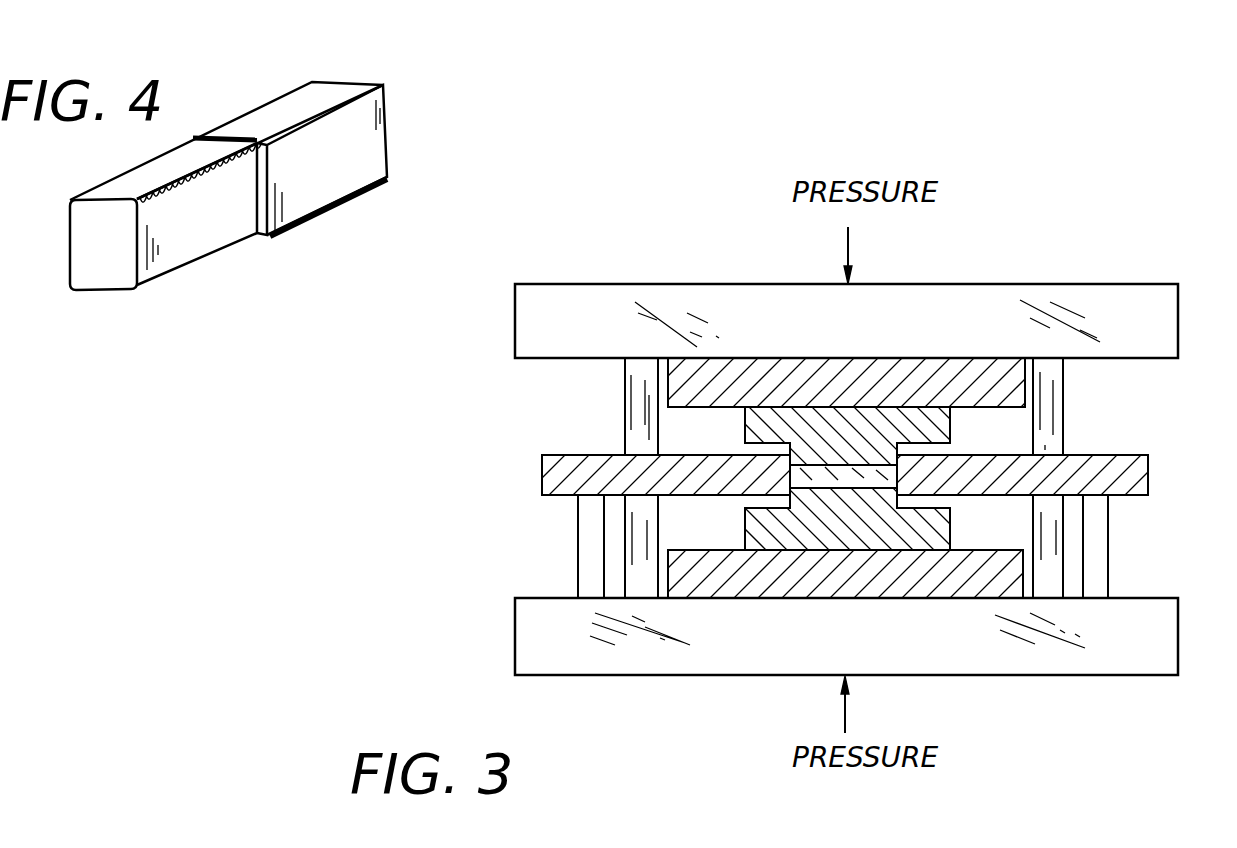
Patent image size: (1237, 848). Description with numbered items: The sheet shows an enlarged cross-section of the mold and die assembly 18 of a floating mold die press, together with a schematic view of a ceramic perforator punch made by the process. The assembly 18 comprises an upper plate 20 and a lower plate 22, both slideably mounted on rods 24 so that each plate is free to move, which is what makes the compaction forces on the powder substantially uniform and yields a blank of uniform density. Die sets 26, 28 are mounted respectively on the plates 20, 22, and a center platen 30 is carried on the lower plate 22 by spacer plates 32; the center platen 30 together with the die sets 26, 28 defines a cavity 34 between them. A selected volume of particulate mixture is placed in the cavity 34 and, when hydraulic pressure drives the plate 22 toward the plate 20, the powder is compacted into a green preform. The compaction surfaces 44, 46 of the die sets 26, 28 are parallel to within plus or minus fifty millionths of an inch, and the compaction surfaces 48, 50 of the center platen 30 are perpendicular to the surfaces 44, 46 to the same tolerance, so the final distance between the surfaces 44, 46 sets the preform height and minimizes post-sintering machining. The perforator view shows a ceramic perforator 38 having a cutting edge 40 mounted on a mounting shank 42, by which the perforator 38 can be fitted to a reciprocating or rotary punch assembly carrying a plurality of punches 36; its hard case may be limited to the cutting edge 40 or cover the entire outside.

In FIG. 3, the mold and die assembly 18 is at (963, 268).
In FIG. 3, the plate 20 is at (737, 286).
In FIG. 3, the plate 22 is at (513, 645).
In FIG. 3, the rods 24 is at (625, 403).
In FIG. 3, the die set 26 is at (950, 443).
In FIG. 3, the die set 28 is at (955, 542).
In FIG. 3, the center platen 30 is at (547, 457).
In FIG. 3, the spacer plates 32 is at (577, 538).
In FIG. 3, the cavity 34 is at (800, 482).
In FIG. 4, the punches 36 is at (310, 225).
In FIG. 4, the ceramic perforator 38 is at (222, 250).
In FIG. 4, the cutting edge 40 is at (110, 270).
In FIG. 4, the mounting shank 42 is at (388, 143).
In FIG. 3, the compaction surface 44 is at (875, 438).
In FIG. 3, the compaction surface 46 is at (864, 485).
In FIG. 3, the compaction surface 48 is at (802, 478).
In FIG. 3, the compaction surface 50 is at (898, 478).